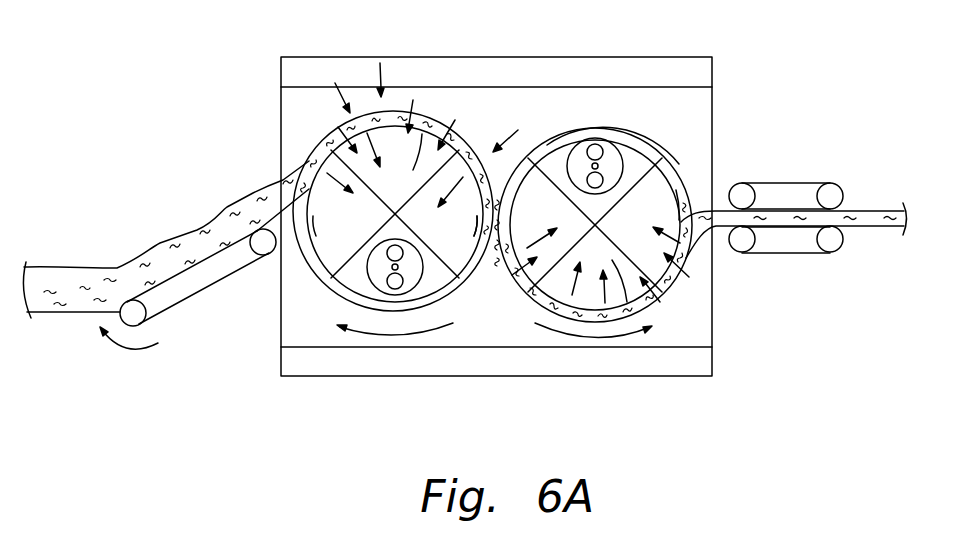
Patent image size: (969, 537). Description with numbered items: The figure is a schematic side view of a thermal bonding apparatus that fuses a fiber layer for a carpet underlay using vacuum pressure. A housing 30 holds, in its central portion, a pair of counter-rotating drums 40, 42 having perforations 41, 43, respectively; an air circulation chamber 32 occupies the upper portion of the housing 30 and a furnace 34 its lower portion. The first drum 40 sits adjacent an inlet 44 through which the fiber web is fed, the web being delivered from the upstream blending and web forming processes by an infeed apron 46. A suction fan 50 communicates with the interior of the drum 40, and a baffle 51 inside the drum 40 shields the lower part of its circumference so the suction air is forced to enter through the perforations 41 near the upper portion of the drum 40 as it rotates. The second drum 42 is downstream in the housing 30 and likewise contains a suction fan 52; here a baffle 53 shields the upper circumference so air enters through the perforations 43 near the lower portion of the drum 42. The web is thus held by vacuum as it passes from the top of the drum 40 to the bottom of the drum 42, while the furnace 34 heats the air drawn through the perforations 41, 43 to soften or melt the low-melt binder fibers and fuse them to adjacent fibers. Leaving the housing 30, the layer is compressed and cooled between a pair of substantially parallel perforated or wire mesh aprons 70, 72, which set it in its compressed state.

The housing 30 is at (713, 102).
The air circulation chamber 32 is at (513, 72).
The furnace 34 is at (493, 362).
The drum 40 is at (317, 277).
The perforations 41 is at (422, 135).
The drum 42 is at (677, 174).
The perforations 43 is at (600, 265).
The inlet 44 is at (289, 175).
The infeed apron 46 is at (184, 306).
The suction fan 50 is at (372, 262).
The baffle 51 is at (463, 262).
The suction fan 52 is at (569, 170).
The baffle 53 is at (647, 151).
The first perforated apron 70 is at (807, 182).
The second perforated apron 72 is at (808, 254).